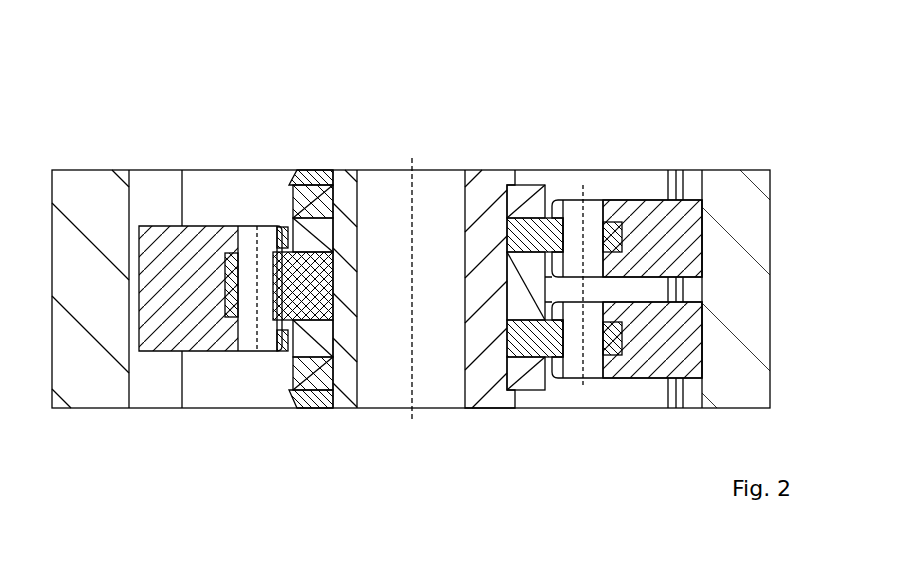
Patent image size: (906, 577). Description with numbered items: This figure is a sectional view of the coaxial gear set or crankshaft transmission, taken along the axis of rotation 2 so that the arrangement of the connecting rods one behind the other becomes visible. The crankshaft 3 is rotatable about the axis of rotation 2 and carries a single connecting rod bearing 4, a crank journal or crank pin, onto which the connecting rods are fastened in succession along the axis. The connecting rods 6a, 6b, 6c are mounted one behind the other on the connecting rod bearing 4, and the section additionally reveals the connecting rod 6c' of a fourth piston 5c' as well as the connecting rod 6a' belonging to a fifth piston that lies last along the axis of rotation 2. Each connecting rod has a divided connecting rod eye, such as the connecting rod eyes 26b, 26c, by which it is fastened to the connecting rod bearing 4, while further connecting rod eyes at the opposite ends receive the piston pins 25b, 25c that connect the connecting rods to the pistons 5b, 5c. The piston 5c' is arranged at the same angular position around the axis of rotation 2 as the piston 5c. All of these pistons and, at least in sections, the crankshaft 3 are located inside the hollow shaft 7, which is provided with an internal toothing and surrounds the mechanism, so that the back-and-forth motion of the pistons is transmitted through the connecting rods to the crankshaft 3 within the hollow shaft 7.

The axis of rotation 2 is at (415, 387).
The crankshaft 3 is at (486, 240).
The connecting rod bearing 4 is at (478, 190).
The piston 5b is at (185, 277).
The piston 5c is at (634, 217).
The fourth piston 5c' is at (627, 380).
The connecting rod 6a is at (312, 218).
The connecting rod 6a' is at (303, 419).
The connecting rod 6b is at (265, 226).
The connecting rod 6c is at (564, 217).
The connecting rod 6c' is at (553, 421).
The hollow shaft 7 is at (745, 218).
The piston pin 25b is at (243, 226).
The piston pin 25c is at (590, 213).
The connecting rod eye 26b is at (245, 226).
The connecting rod eye 26c is at (566, 205).